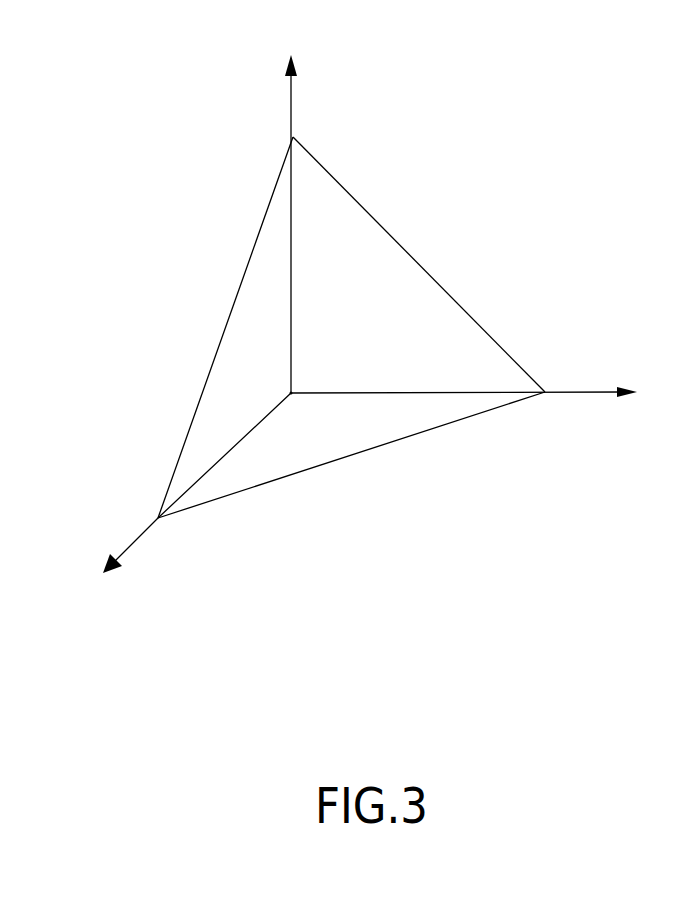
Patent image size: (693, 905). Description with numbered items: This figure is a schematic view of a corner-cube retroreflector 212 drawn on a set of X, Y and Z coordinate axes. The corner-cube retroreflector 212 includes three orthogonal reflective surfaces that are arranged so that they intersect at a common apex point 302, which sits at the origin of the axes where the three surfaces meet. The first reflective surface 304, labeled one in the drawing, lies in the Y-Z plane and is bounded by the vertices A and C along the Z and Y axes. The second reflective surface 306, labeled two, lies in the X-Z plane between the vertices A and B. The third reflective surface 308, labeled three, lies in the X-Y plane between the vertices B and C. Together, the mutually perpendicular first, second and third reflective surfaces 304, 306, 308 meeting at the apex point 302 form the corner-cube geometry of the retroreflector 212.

The corner-cube retroreflector 212 is at (203, 52).
The apex point 302 is at (291, 410).
The first reflective surface 304 is at (418, 260).
The second reflective surface 306 is at (218, 347).
The third reflective surface 308 is at (457, 422).